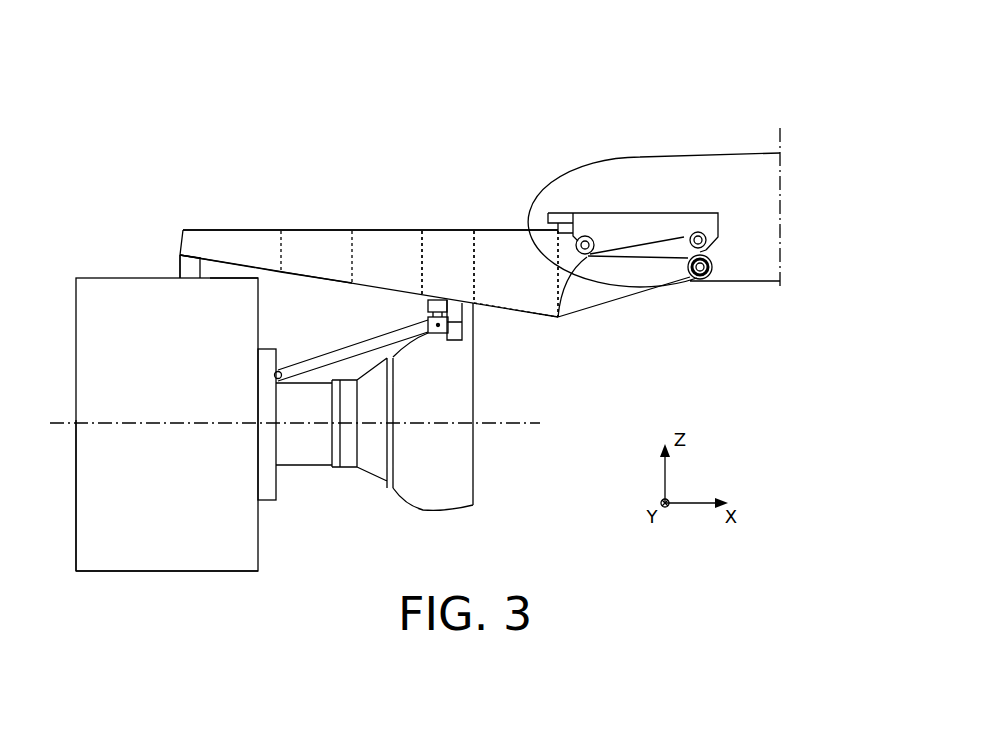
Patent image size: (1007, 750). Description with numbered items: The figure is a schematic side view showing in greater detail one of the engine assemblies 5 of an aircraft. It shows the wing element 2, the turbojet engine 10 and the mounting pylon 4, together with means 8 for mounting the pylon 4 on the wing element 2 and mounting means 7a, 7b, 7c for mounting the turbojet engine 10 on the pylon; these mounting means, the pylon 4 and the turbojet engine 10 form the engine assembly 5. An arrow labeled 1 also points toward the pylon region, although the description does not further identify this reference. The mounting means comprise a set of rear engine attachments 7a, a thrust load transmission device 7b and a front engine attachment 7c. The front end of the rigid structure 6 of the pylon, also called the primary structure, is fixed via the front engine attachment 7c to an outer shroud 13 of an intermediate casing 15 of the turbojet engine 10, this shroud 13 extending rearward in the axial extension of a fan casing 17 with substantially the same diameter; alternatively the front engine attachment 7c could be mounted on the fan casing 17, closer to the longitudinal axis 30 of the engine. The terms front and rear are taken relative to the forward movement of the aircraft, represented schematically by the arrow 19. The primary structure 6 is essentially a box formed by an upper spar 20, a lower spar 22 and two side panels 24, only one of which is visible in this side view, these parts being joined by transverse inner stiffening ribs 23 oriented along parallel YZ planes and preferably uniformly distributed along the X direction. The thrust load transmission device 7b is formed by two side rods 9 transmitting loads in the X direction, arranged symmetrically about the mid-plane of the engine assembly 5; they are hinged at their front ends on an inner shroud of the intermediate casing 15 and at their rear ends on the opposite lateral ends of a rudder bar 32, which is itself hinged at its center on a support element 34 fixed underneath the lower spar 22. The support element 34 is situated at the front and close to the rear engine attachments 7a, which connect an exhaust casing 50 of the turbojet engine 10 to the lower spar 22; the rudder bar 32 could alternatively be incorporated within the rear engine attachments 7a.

The thrust reverser cowl 1 is at (509, 208).
The wing element 2 is at (728, 170).
The mounting pylon 4 is at (346, 190).
The engine assembly 5 is at (240, 100).
The rigid structure 6 is at (293, 243).
The rear engine attachments 7a is at (475, 318).
The thrust load transmission device 7b is at (323, 340).
The front engine attachment 7c is at (185, 270).
The means for mounting the pylon on the wing element 8 is at (695, 232).
The side rods 9 is at (281, 369).
The turbojet engine 10 is at (98, 627).
The outer shroud 13 is at (192, 297).
The intermediate casing 15 is at (242, 583).
The fan casing 17 is at (85, 293).
The arrow 19 is at (405, 95).
The upper spar 20 is at (457, 230).
The lower spar 22 is at (553, 318).
The transverse inner stiffening ribs 23 is at (473, 252).
The side panels 24 is at (245, 248).
The longitudinal axis 30 is at (537, 427).
The rudder bar 32 is at (443, 335).
The support element 34 is at (428, 302).
The exhaust casing 50 is at (460, 400).